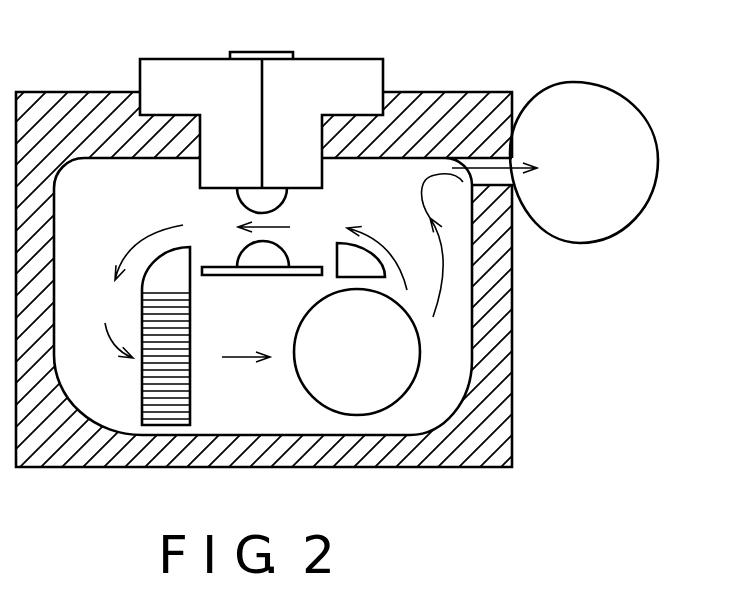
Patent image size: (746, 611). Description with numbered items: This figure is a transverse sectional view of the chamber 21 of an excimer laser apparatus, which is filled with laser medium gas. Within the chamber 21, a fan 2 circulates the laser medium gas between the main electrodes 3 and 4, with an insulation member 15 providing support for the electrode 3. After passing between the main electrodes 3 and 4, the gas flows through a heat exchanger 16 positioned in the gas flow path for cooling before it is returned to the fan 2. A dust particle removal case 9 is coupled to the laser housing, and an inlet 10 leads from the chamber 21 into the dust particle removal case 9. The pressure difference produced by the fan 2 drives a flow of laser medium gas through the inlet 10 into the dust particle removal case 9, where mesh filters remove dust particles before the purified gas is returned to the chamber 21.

The fan 2 is at (293, 338).
The main electrode 3 is at (237, 202).
The main electrode 4 is at (287, 252).
The dust particle removal case 9 is at (585, 82).
The inlet 10 is at (493, 175).
The insulation member 15 is at (383, 70).
The heat exchanger 16 is at (192, 388).
The chamber 21 is at (80, 207).